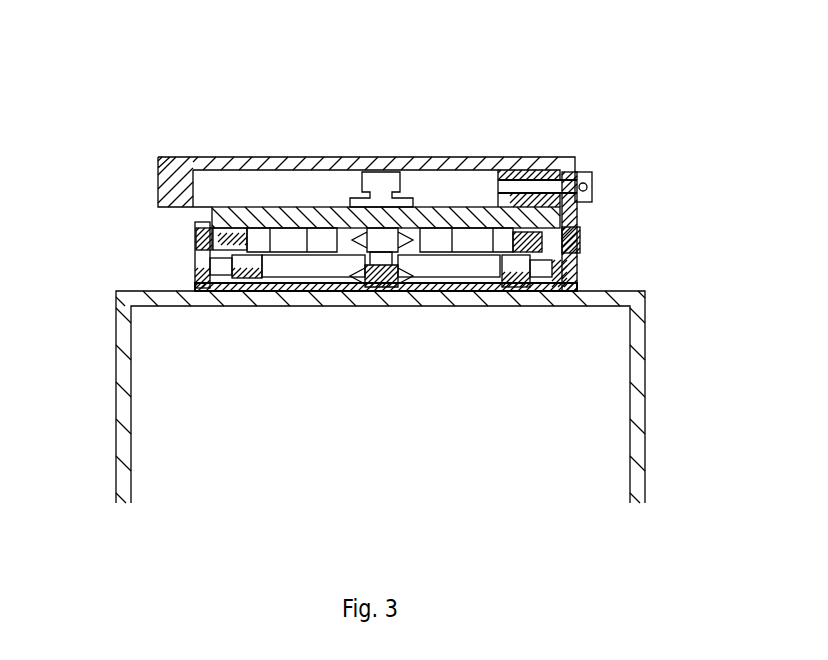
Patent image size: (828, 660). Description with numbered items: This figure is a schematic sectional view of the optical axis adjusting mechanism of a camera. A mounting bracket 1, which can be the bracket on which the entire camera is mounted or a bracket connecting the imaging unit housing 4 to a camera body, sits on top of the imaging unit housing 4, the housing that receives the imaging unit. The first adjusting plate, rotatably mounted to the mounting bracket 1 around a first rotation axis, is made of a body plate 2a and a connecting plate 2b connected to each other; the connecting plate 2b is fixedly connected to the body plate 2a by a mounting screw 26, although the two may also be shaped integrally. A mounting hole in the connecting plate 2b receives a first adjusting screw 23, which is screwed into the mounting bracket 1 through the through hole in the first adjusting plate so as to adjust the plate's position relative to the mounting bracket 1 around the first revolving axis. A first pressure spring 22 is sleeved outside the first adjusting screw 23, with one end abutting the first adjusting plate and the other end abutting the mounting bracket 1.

The mounting bracket 1 is at (240, 157).
The body plate 2a is at (297, 210).
The connecting plate 2b is at (575, 162).
The first pressure spring 22 is at (553, 175).
The first adjusting screw 23 is at (592, 192).
The mounting screw 26 is at (578, 240).
The imaging unit housing 4 is at (158, 297).